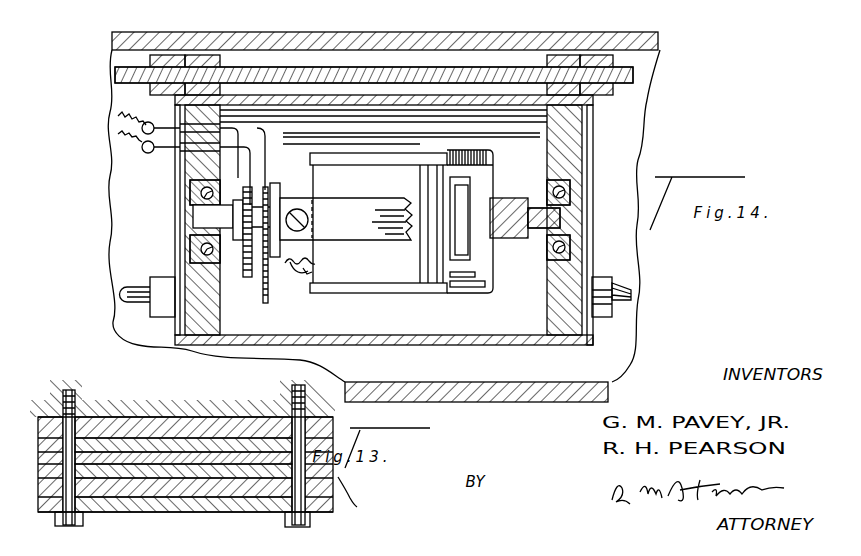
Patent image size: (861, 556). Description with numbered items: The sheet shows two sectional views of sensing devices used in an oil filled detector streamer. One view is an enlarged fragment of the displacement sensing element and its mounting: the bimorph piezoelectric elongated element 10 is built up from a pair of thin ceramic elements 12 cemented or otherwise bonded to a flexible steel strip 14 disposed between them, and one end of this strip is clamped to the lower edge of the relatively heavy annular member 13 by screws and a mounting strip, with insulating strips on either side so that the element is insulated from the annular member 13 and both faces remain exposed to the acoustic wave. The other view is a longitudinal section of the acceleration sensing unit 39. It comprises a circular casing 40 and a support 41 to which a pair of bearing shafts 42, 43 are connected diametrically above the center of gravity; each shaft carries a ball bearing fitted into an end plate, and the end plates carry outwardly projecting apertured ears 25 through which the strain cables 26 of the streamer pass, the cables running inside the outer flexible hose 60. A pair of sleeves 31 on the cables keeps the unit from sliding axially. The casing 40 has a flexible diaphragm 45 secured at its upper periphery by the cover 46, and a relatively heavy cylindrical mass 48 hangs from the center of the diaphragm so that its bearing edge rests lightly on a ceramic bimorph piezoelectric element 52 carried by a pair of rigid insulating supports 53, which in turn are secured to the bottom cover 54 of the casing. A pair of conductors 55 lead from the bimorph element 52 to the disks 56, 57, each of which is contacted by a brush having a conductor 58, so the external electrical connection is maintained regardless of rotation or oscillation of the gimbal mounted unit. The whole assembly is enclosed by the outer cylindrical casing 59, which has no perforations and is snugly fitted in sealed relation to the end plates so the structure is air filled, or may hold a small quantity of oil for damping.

In FIG. 13, the bimorph piezoelectric elongated element 10 is at (335, 472).
In FIG. 13, the ceramic elements 12 is at (120, 438).
In FIG. 13, the annular member 13 is at (28, 418).
In FIG. 13, the flexible steel strip 14 is at (173, 452).
In FIG. 14, the ears 25 is at (207, 53).
In FIG. 14, the strain cables 26 is at (635, 78).
In FIG. 14, the sleeves 31 is at (167, 53).
In FIG. 14, the acceleration sensing unit 39 is at (327, 195).
In FIG. 14, the circular casing 40 is at (378, 272).
In FIG. 14, the support 41 is at (292, 193).
In FIG. 14, the bearing shaft 42 is at (568, 220).
In FIG. 14, the bearing shaft 43 is at (208, 222).
In FIG. 14, the flexible diaphragm 45 is at (484, 158).
In FIG. 14, the cover 46 is at (371, 161).
In FIG. 14, the cylindrical mass 48 is at (472, 202).
In FIG. 14, the ceramic bimorph piezoelectric element 52 is at (463, 268).
In FIG. 14, the supports 53 is at (477, 285).
In FIG. 14, the bottom cover 54 is at (352, 288).
In FIG. 14, the conductors 55 is at (297, 272).
In FIG. 14, the disk 56 is at (243, 275).
In FIG. 14, the disk 57 is at (261, 297).
In FIG. 14, the conductor 58 is at (118, 122).
In FIG. 14, the outer cylindrical casing 59 is at (470, 350).
In FIG. 14, the flexible hose 60 is at (648, 33).